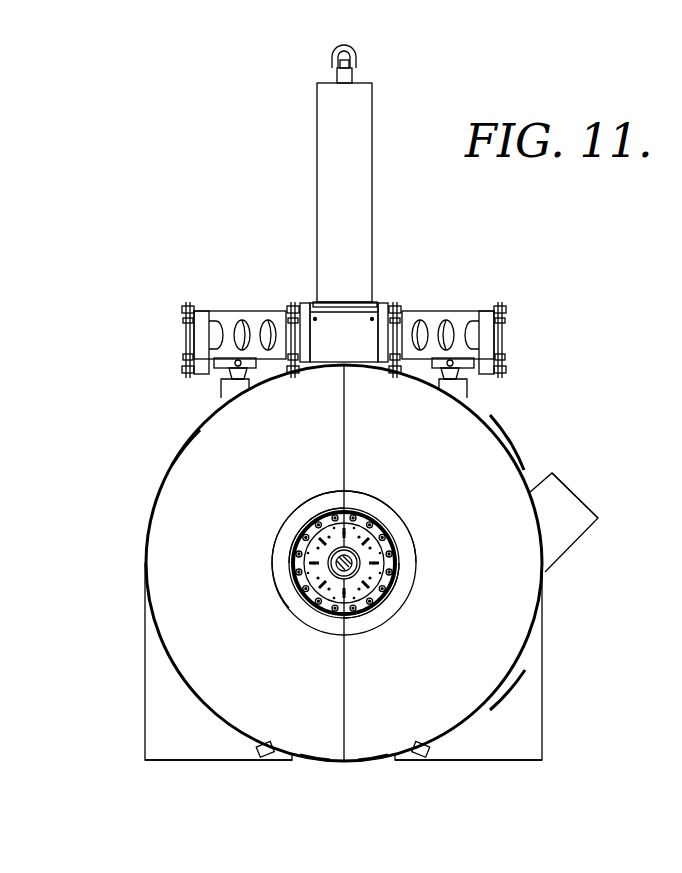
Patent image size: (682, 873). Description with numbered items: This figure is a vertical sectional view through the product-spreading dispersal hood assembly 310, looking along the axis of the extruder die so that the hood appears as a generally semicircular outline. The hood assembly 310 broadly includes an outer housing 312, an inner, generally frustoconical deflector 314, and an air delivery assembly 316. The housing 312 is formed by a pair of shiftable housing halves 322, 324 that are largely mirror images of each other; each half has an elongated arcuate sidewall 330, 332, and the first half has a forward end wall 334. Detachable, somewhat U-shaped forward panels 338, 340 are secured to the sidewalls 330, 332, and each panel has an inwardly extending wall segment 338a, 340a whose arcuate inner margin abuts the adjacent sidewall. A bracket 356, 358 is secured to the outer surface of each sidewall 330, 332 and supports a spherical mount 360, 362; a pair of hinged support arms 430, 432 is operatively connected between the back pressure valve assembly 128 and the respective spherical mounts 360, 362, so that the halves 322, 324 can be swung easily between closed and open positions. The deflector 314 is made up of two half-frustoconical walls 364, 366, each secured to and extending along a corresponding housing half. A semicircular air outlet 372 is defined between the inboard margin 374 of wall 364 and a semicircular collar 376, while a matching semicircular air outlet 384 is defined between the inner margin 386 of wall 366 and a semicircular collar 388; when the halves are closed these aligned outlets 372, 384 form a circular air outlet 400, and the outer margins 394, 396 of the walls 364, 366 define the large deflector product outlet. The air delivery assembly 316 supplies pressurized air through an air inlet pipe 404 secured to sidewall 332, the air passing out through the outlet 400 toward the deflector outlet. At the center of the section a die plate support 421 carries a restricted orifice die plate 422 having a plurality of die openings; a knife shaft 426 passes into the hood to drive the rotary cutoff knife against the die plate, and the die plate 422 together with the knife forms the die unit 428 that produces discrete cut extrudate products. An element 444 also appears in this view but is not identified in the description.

The back pressure valve assembly 128 is at (372, 210).
The product-spreading dispersal hood assembly 310 is at (533, 298).
The outer housing 312 is at (557, 407).
The deflector 314 is at (512, 639).
The air delivery assembly 316 is at (575, 557).
The housing half 322 is at (155, 498).
The housing half 324 is at (520, 465).
The arcuate sidewall 330 is at (172, 465).
The arcuate sidewall 332 is at (505, 442).
The forward end wall 334 is at (681, 395).
The forward panel 338 is at (145, 715).
The wall segment 338a is at (180, 745).
The forward panel 340 is at (542, 720).
The wall segment 340a is at (507, 750).
The bracket 356 is at (222, 385).
The bracket 358 is at (480, 393).
The spherical mount 360 is at (257, 372).
The spherical mount 362 is at (431, 372).
The half-frustoconical wall 364 is at (310, 727).
The half-frustoconical wall 366 is at (372, 737).
The semicircular air outlet 372 is at (290, 535).
The inboard margin 374 is at (270, 570).
The semicircular collar 376 is at (303, 598).
The semicircular air outlet 384 is at (388, 517).
The inner margin 386 is at (412, 542).
The semicircular collar 388 is at (372, 610).
The outer margin 394 is at (240, 730).
The outer margin 396 is at (445, 725).
The circular air outlet 400 is at (375, 492).
The air inlet pipe 404 is at (568, 500).
The die plate support 421 is at (290, 528).
The die plate 422 is at (380, 570).
The knife shaft 426 is at (337, 597).
The die unit 428 is at (365, 628).
The hinged support arm 430 is at (252, 318).
The hinged support arm 432 is at (437, 317).
The shaft 444 is at (312, 513).